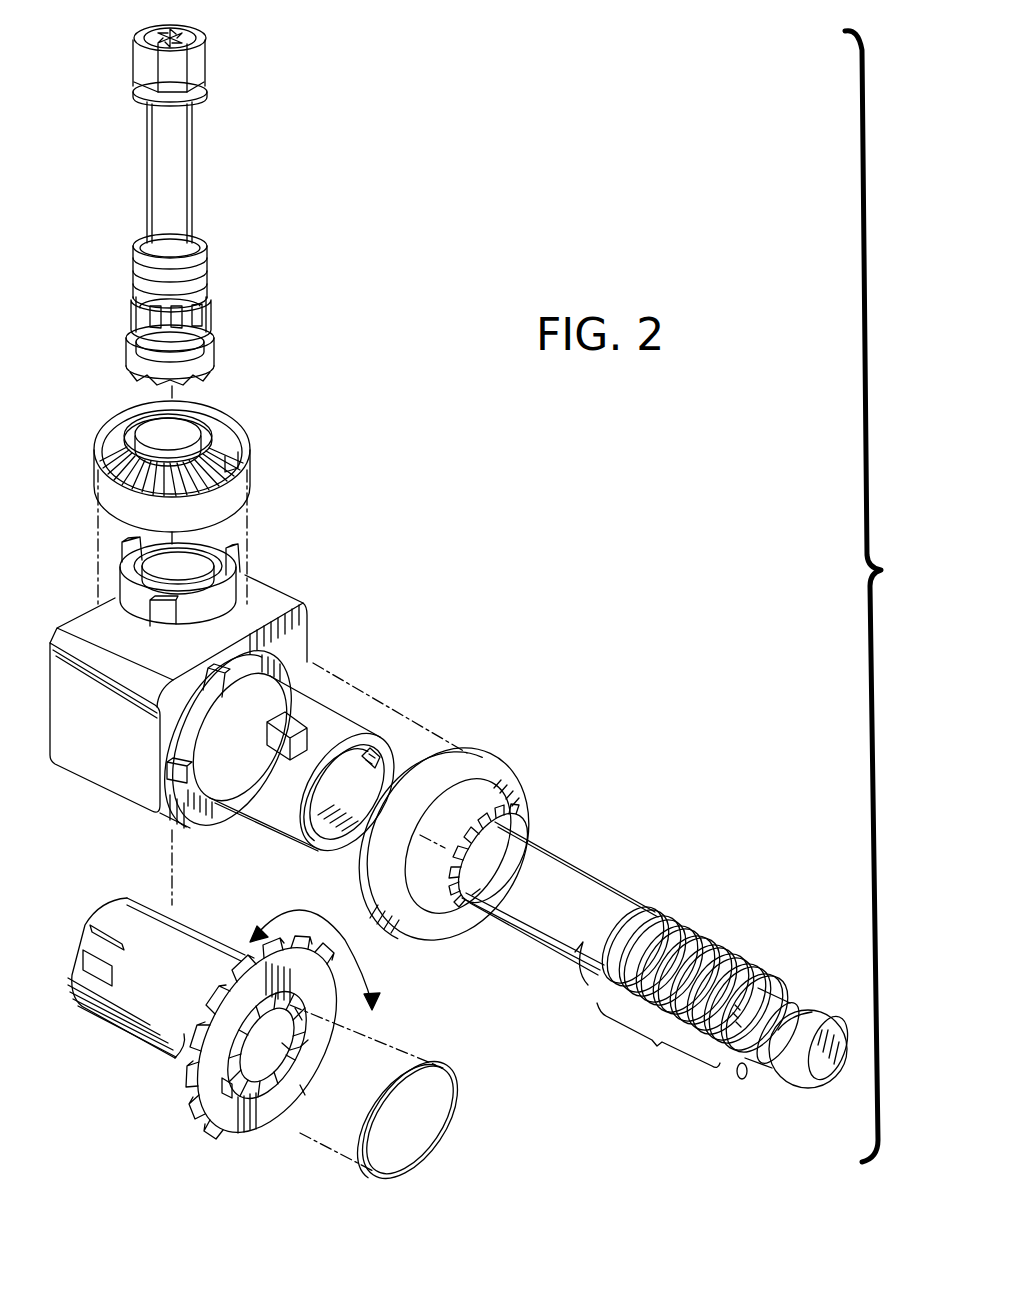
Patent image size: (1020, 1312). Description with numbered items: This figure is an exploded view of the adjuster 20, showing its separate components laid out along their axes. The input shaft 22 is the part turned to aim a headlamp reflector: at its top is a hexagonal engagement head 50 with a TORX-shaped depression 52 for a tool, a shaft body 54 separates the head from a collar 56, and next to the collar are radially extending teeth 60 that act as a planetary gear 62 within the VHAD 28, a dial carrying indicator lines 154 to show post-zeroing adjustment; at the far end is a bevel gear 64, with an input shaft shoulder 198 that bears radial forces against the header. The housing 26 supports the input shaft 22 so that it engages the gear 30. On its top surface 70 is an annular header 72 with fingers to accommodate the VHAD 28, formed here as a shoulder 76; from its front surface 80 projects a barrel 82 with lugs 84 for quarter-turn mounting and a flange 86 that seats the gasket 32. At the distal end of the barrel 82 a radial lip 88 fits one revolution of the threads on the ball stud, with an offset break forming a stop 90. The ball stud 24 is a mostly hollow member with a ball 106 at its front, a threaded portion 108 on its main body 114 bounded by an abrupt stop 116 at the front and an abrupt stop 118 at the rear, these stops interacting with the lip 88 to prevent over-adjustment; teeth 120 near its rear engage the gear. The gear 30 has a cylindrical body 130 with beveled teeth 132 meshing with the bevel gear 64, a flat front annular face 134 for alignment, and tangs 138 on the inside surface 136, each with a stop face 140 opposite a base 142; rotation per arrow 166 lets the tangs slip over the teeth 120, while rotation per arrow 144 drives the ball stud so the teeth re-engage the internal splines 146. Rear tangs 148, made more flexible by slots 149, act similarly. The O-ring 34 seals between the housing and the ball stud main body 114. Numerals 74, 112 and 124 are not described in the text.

The adjuster 20 is at (881, 596).
The input shaft 22 is at (192, 143).
The ball stud 24 is at (646, 976).
The housing 26 is at (285, 600).
The non-recalibratable vehicle headlamp aiming device dial (VHAD) 28 is at (187, 466).
The gear 30 is at (300, 1058).
The gasket 32 is at (520, 785).
The O-ring 34 is at (455, 1085).
The engagement head 50 is at (146, 66).
The depression 52 is at (185, 34).
The shaft body 54 is at (166, 186).
The collar 56 is at (142, 252).
The teeth 60 is at (210, 306).
The planetary gear 62 is at (152, 319).
The bevel gear 64 is at (130, 368).
The top surface 70 is at (265, 585).
The annular header 72 is at (140, 612).
The tab 74 is at (162, 626).
The shoulder 76 is at (102, 608).
The front surface 80 is at (175, 704).
The barrel 82 is at (305, 696).
The lugs 84 is at (352, 700).
The flange 86 is at (292, 660).
The radial lip 88 is at (385, 722).
The stop 90 is at (392, 757).
The ball 106 is at (798, 1022).
The threaded portion 108 is at (692, 930).
The threaded section 112 is at (658, 1042).
The main body 114 is at (518, 928).
The abrupt stop 116 is at (590, 962).
The abrupt stop 118 is at (735, 1082).
The teeth 120 is at (500, 852).
The neck 124 is at (772, 995).
The cylindrical body 130 is at (141, 965).
The beveled teeth 132 is at (165, 1058).
The front annular face 134 is at (218, 1066).
The inside surface 136 is at (300, 1070).
The tangs 138 is at (205, 1025).
The stop face 140 is at (232, 1118).
The base 142 is at (218, 1088).
The arrow 144 is at (375, 1004).
The splines 146 is at (295, 1052).
The tangs 148 is at (75, 975).
The slots 149 is at (98, 930).
The indicator lines 154 is at (102, 458).
The arrow 166 is at (254, 930).
The input shaft shoulder 198 is at (200, 340).